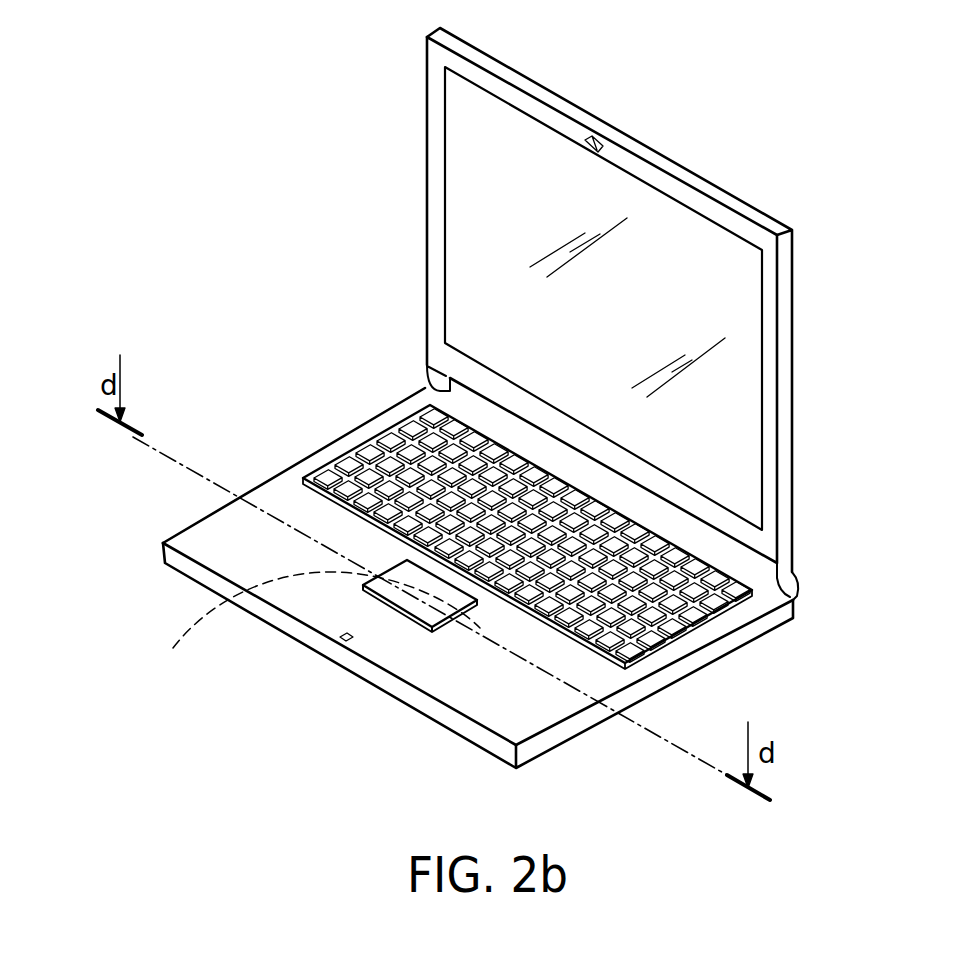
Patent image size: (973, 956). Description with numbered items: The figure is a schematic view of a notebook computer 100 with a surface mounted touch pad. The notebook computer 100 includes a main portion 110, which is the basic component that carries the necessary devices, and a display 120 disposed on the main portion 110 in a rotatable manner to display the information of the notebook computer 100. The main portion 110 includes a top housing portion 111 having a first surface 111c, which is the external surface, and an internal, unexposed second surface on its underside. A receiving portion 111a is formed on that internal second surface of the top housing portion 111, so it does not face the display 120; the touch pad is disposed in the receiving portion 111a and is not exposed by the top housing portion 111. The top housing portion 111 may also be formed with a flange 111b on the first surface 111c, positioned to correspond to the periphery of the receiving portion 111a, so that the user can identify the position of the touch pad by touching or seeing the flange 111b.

The notebook computer 100 is at (100, 90).
The main portion 110 is at (675, 663).
The top housing portion 111 is at (222, 533).
The receiving portion 111a is at (313, 630).
The flange 111b is at (407, 560).
The first surface 111c is at (503, 683).
The display 120 is at (783, 368).